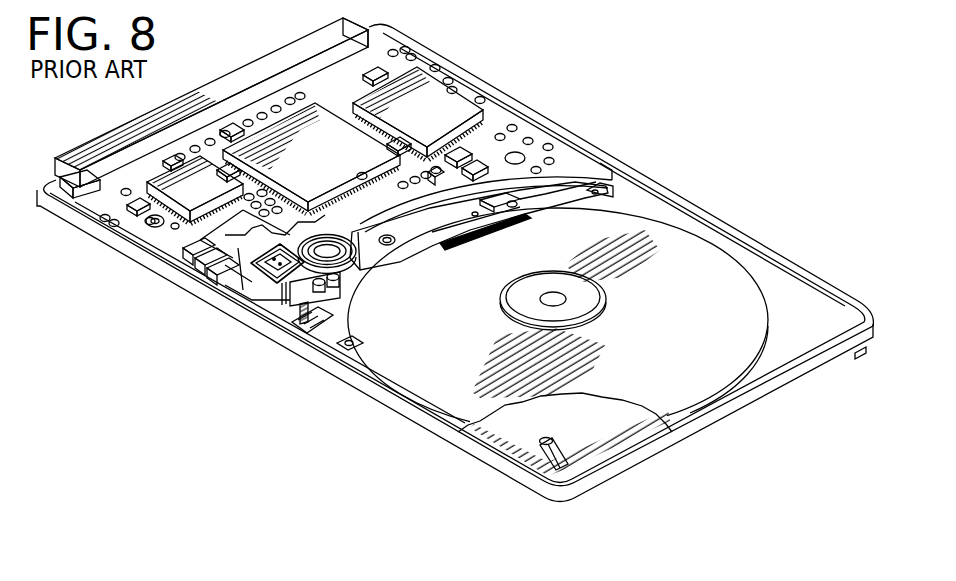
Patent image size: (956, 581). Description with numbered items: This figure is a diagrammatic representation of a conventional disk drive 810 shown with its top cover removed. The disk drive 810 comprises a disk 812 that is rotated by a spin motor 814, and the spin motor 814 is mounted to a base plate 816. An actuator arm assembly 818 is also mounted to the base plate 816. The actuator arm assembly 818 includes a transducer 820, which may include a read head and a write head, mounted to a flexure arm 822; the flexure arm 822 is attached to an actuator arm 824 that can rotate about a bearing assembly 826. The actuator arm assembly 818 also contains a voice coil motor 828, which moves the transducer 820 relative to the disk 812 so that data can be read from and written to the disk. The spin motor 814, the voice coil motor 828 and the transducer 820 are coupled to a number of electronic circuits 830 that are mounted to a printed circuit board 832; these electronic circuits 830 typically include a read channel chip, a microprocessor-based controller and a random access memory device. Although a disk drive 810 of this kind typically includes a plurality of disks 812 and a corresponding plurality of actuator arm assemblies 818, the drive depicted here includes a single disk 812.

The disk drive 810 is at (600, 133).
The disk 812 is at (737, 262).
The spin motor 814 is at (607, 305).
The base plate 816 is at (773, 299).
The actuator arm assembly 818 is at (488, 233).
The transducer 820 is at (530, 201).
The flexure arm 822 is at (446, 236).
The actuator arm 824 is at (373, 254).
The bearing assembly 826 is at (362, 263).
The voice coil motor 828 is at (262, 285).
The electronic circuits 830 is at (219, 197).
The printed circuit board 832 is at (330, 90).